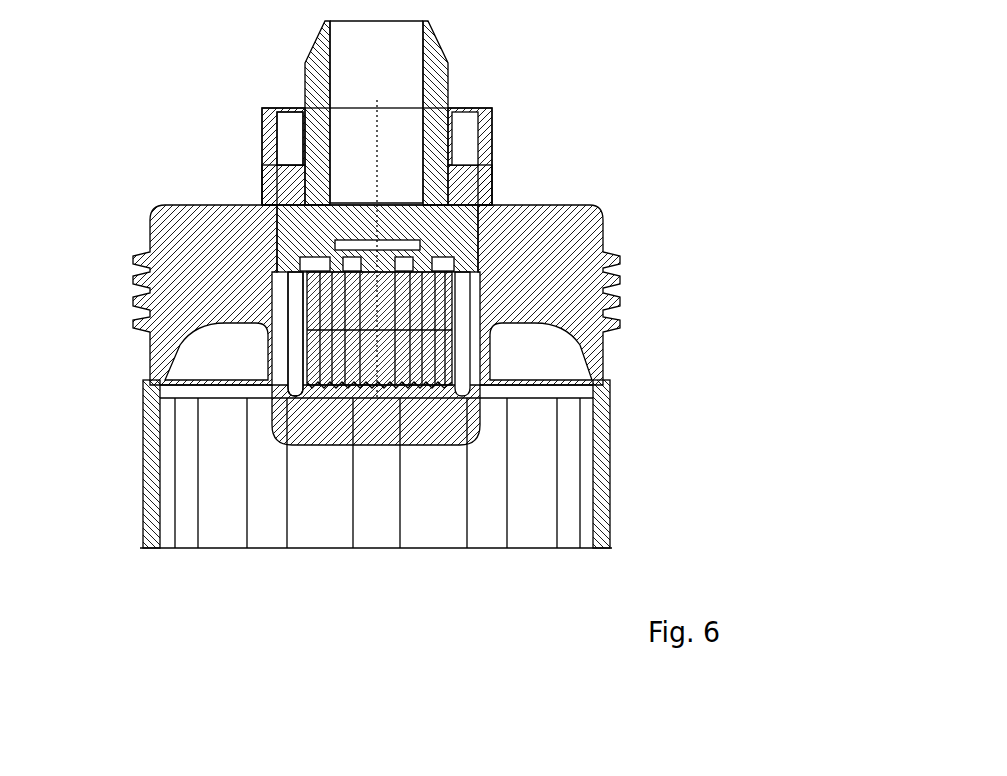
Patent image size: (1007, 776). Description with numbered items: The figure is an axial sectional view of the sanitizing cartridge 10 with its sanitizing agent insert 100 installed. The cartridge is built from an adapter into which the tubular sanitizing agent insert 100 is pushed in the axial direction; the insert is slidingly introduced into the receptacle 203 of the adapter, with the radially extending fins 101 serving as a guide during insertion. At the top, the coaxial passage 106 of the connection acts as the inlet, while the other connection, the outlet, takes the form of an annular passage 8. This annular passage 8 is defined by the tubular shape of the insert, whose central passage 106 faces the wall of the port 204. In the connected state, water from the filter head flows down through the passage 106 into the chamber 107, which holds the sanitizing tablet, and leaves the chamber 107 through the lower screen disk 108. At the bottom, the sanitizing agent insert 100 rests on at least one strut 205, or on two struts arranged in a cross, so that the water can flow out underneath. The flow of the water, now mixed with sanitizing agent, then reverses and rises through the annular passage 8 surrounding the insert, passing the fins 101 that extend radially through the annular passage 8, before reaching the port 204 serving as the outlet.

The sanitizing cartridge 10 is at (178, 565).
The annular passage 8 is at (290, 148).
The sanitizing agent insert 100 is at (313, 77).
The fins 101 is at (292, 203).
The coaxial passage 106 is at (397, 67).
The chamber 107 is at (378, 330).
The lower screen disk 108 is at (408, 385).
The receptacle 203 is at (482, 193).
The port 204 is at (482, 128).
The strut 205 is at (365, 400).